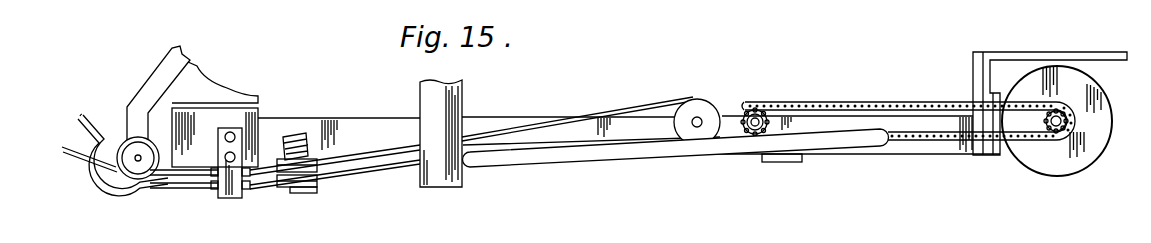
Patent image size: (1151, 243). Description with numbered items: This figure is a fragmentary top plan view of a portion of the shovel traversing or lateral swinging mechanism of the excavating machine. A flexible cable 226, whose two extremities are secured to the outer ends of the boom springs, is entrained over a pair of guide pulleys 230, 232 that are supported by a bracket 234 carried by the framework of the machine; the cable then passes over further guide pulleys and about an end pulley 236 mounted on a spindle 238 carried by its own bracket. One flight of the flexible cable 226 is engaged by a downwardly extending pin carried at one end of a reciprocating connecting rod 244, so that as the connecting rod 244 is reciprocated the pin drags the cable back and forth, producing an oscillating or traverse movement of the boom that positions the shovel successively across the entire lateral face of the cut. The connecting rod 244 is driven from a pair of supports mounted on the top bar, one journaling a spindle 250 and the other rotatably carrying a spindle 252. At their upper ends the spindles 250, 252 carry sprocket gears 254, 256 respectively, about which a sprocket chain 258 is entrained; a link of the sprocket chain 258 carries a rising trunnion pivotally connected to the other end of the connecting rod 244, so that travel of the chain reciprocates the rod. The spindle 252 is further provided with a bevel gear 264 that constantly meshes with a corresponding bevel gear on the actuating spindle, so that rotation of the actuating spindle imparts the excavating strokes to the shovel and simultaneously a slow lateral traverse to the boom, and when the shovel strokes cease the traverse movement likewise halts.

The flexible cable 226 is at (357, 163).
The guide pulley 230 is at (122, 147).
The guide pulley 232 is at (137, 181).
The bracket 234 is at (150, 90).
The end pulley 236 is at (698, 116).
The spindle 238 is at (681, 103).
The reciprocating connecting rod 244 is at (653, 136).
The spindle 250 is at (744, 108).
The spindle 252 is at (1062, 116).
The sprocket gear 254 is at (777, 103).
The sprocket gear 256 is at (1045, 133).
The sprocket chain 258 is at (878, 103).
The bevel gear 264 is at (1085, 171).